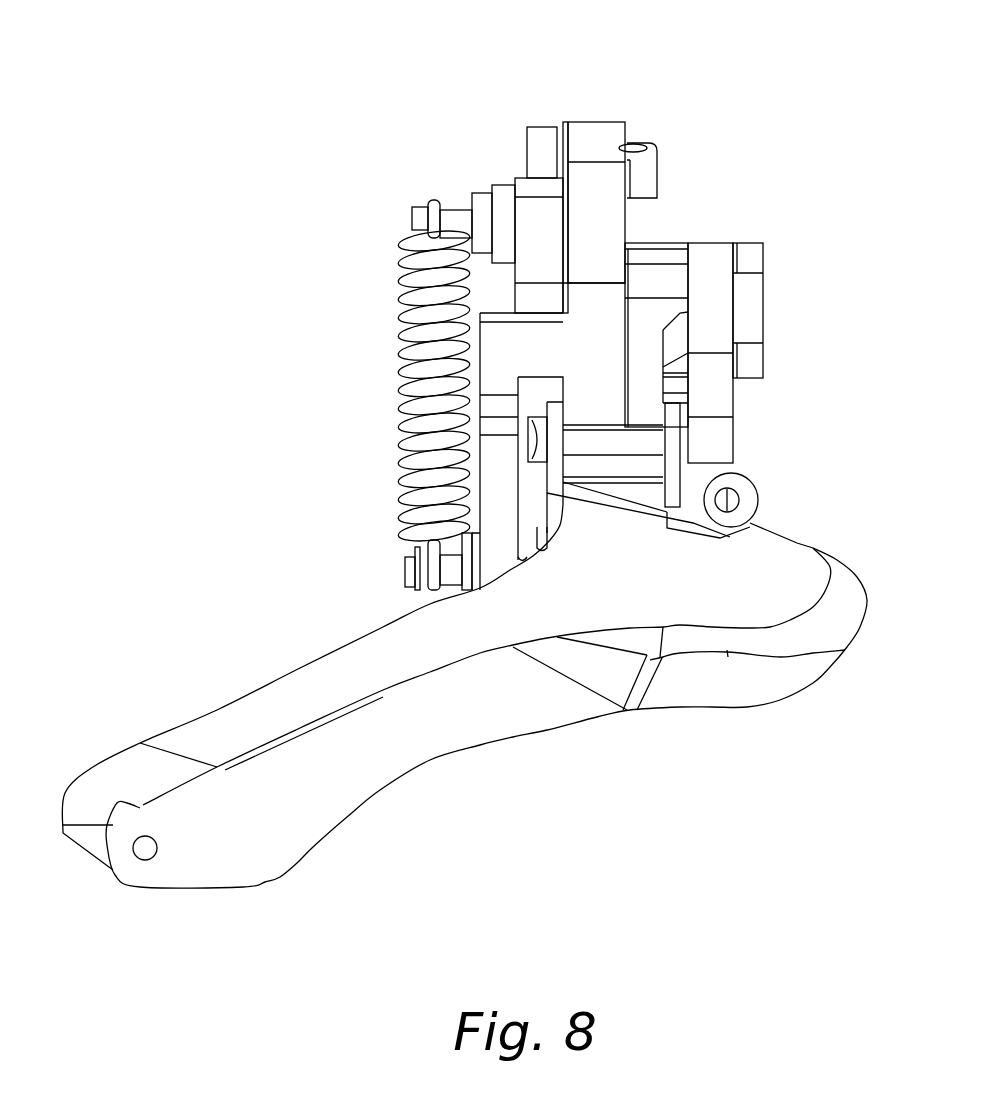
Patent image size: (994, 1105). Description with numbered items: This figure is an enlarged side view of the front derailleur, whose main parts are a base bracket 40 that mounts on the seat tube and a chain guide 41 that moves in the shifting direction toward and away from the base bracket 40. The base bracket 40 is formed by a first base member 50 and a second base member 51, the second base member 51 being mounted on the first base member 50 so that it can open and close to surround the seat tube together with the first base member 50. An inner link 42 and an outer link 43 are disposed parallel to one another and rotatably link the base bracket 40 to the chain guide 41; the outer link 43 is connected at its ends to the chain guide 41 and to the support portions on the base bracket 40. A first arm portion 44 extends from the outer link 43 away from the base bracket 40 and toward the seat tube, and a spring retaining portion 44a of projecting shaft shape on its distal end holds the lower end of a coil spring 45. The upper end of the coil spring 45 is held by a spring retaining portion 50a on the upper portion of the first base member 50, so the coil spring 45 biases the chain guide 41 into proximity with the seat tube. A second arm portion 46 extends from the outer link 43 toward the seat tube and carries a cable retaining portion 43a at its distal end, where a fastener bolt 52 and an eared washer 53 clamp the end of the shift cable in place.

The base bracket 40 is at (717, 310).
The chain guide 41 is at (530, 717).
The inner link 42 is at (643, 333).
The outer link 43 is at (500, 363).
The cable retaining portion 43a is at (543, 153).
The first arm portion 44 is at (497, 502).
The spring retaining portion 44a is at (403, 583).
The coil spring 45 is at (400, 330).
The second arm portion 46 is at (608, 128).
The first base member 50 is at (715, 242).
The spring retaining portion 50a is at (448, 217).
The second base member 51 is at (753, 325).
The fastener bolt 52 is at (535, 132).
The eared washer 53 is at (562, 123).